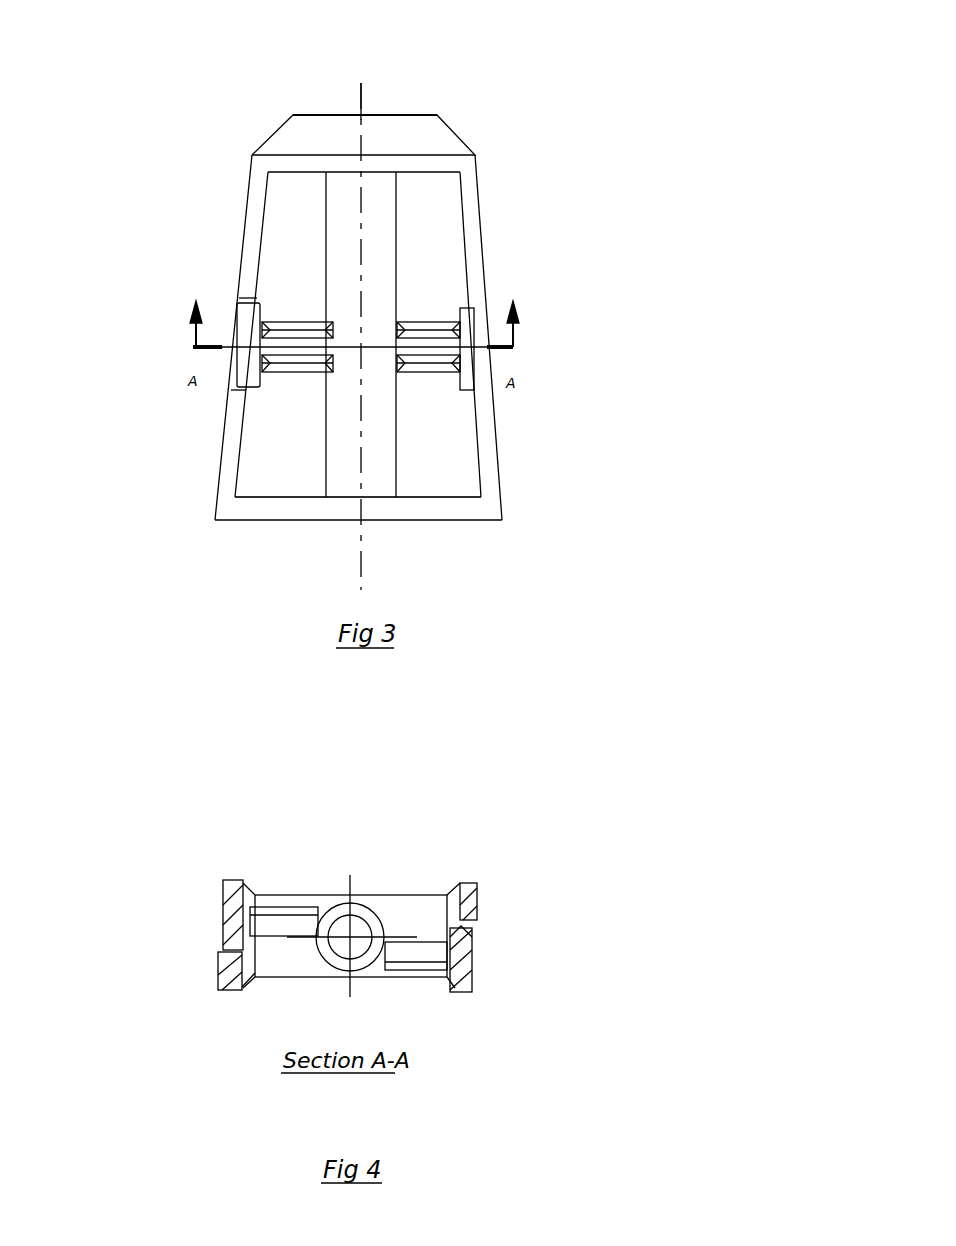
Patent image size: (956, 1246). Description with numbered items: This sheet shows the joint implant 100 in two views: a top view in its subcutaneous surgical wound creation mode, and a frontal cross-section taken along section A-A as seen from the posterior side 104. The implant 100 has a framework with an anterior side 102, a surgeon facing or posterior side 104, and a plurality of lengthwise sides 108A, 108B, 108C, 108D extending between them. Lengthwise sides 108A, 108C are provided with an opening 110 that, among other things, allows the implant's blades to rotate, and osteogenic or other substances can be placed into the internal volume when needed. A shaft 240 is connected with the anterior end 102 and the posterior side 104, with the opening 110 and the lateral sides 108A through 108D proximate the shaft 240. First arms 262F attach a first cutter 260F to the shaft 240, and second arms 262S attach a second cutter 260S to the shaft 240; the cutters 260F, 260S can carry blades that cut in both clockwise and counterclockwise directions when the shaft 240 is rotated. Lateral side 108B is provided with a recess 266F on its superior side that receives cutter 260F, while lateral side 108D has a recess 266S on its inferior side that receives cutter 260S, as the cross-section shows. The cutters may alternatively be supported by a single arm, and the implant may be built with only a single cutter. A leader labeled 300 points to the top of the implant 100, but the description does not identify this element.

In FIG. 3, the joint implant 100 is at (519, 336).
In FIG. 3, the anterior side 102 is at (432, 60).
In FIG. 3, the posterior side 104 is at (384, 556).
In FIG. 3, the lengthwise side 108A is at (411, 111).
In FIG. 3, the lengthwise side 108B is at (167, 337).
In FIG. 4, the lengthwise side 108B is at (161, 974).
In FIG. 3, the lengthwise side 108C is at (357, 554).
In FIG. 3, the lengthwise side 108D is at (560, 337).
In FIG. 4, the lengthwise side 108D is at (555, 905).
In FIG. 3, the opening 110 is at (203, 331).
In FIG. 4, the opening 110 is at (301, 977).
In FIG. 3, the shaft 240 is at (466, 334).
In FIG. 4, the shaft 240 is at (408, 904).
In FIG. 3, the first cutter 260F is at (180, 344).
In FIG. 4, the first cutter 260F is at (175, 910).
In FIG. 3, the second cutter 260S is at (547, 334).
In FIG. 4, the second cutter 260S is at (529, 966).
In FIG. 3, the first arms 262F is at (218, 398).
In FIG. 4, the first arms 262F is at (268, 873).
In FIG. 3, the second arms 262S is at (517, 252).
In FIG. 4, the second arms 262S is at (462, 992).
In FIG. 3, the recess 266F is at (178, 308).
In FIG. 4, the recess 266F is at (169, 952).
In FIG. 3, the recess 266S is at (536, 323).
In FIG. 4, the recess 266S is at (540, 889).
In FIG. 3, the cap 300 is at (329, 73).